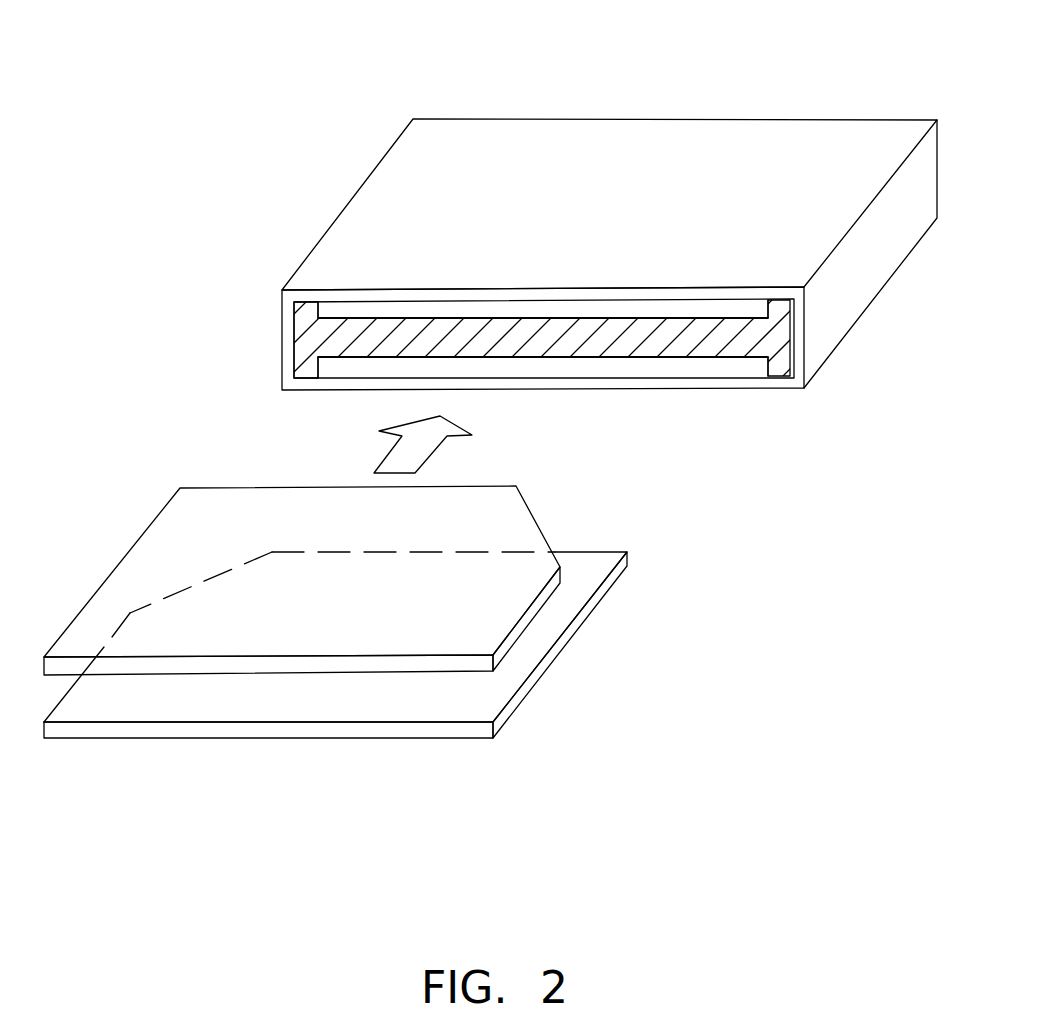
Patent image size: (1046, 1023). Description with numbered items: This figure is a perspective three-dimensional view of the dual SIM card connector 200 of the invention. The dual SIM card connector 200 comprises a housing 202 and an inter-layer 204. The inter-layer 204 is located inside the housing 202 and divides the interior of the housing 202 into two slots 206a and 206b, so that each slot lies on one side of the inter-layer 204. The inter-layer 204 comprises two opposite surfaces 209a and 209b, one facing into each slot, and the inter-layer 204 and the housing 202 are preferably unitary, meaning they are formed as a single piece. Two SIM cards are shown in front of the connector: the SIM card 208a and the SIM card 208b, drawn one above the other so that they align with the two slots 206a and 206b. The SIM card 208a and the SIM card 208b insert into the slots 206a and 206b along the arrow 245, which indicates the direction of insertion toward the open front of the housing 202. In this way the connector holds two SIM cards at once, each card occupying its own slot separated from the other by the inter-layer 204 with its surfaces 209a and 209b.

The dual SIM card connector 200 is at (597, 118).
The housing 202 is at (847, 295).
The inter-layer 204 is at (740, 338).
The slot 206a is at (628, 307).
The slot 206b is at (647, 363).
The surface 209a is at (452, 320).
The surface 209b is at (490, 357).
The SIM card 208a is at (185, 520).
The SIM card 208b is at (483, 695).
The arrow 245 is at (403, 453).